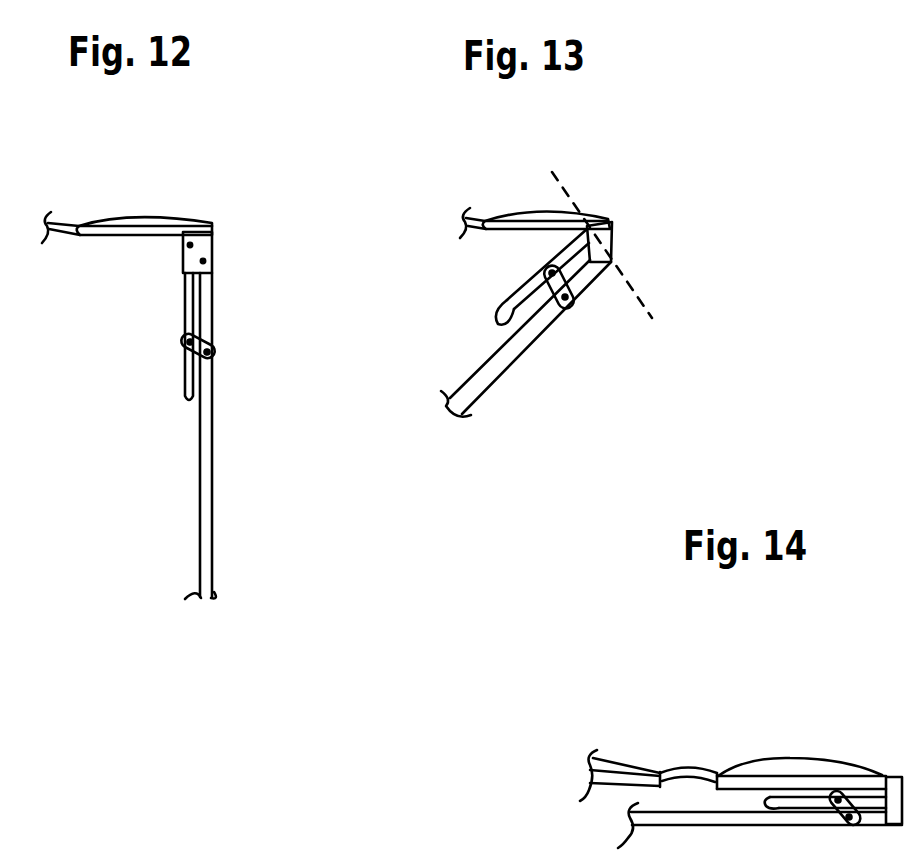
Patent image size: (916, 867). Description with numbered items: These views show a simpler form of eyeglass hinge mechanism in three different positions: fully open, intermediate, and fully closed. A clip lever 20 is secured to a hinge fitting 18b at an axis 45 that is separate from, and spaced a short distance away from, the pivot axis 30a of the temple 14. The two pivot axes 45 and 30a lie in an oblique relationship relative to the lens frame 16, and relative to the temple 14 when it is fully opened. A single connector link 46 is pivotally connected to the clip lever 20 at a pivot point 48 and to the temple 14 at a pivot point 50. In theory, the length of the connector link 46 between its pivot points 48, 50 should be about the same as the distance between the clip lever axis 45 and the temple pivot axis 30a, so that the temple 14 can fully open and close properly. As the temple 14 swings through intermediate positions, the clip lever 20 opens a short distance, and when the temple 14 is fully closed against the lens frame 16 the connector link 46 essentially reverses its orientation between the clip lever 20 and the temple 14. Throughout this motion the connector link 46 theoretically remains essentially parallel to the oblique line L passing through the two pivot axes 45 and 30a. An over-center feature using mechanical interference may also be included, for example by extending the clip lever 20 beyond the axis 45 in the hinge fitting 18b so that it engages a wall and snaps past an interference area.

In FIG. 12, the temple 14 is at (200, 492).
In FIG. 13, the temple 14 is at (483, 378).
In FIG. 14, the temple 14 is at (713, 820).
In FIG. 12, the lens frame 16 is at (150, 222).
In FIG. 13, the lens frame 16 is at (535, 223).
In FIG. 14, the lens frame 16 is at (684, 759).
In FIG. 12, the hinge fitting 18b is at (201, 251).
In FIG. 14, the hinge fitting 18b is at (895, 786).
In FIG. 12, the clip lever 20 is at (185, 400).
In FIG. 13, the clip lever 20 is at (513, 300).
In FIG. 12, the pivot axis 30a is at (209, 261).
In FIG. 12, the axis 45 is at (183, 244).
In FIG. 12, the connector link 46 is at (211, 339).
In FIG. 12, the pivot point 48 is at (183, 337).
In FIG. 12, the pivot point 50 is at (213, 352).
In FIG. 13, the oblique line L is at (572, 183).